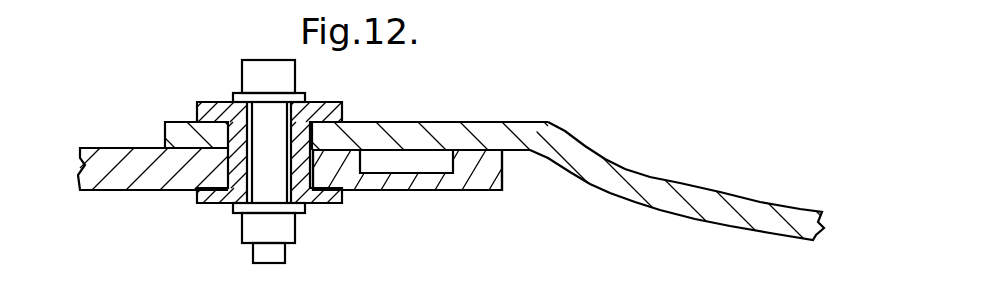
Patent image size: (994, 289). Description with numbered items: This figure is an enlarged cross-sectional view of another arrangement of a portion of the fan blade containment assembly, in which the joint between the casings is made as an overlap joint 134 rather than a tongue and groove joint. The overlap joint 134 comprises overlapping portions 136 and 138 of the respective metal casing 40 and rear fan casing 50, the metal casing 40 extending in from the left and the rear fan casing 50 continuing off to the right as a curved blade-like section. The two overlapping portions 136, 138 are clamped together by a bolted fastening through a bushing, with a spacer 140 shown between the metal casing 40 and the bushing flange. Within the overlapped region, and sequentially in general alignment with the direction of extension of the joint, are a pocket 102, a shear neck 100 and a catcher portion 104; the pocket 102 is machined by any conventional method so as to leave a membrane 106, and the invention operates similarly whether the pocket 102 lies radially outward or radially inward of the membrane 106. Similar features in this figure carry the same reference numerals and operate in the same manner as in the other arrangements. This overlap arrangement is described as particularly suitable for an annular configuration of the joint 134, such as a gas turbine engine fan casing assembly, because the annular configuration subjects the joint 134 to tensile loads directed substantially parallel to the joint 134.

The metal casing 40 is at (118, 148).
The spacer 140 is at (150, 145).
The overlap joint 134 is at (450, 143).
The overlapping portion 138 is at (374, 117).
The overlapping portion 136 is at (471, 194).
The pocket 102 is at (433, 157).
The shear neck 100 is at (343, 162).
The membrane 106 is at (432, 180).
The catcher portion 104 is at (487, 165).
The rear fan casing 50 is at (693, 185).